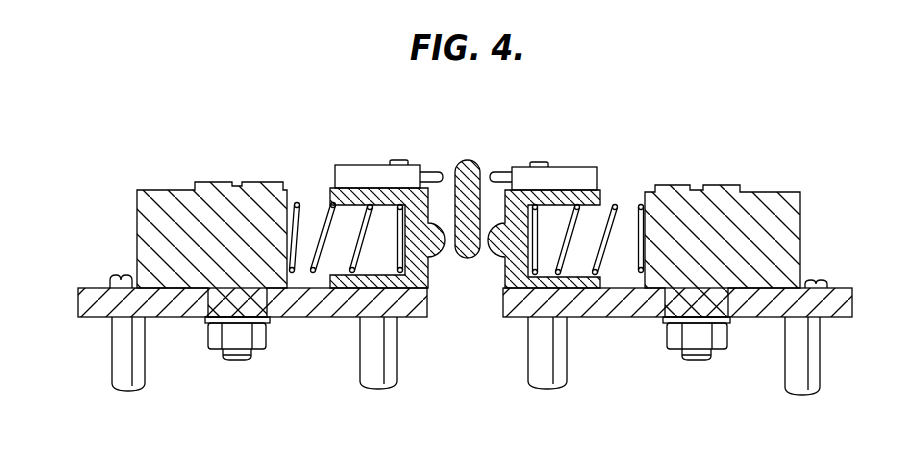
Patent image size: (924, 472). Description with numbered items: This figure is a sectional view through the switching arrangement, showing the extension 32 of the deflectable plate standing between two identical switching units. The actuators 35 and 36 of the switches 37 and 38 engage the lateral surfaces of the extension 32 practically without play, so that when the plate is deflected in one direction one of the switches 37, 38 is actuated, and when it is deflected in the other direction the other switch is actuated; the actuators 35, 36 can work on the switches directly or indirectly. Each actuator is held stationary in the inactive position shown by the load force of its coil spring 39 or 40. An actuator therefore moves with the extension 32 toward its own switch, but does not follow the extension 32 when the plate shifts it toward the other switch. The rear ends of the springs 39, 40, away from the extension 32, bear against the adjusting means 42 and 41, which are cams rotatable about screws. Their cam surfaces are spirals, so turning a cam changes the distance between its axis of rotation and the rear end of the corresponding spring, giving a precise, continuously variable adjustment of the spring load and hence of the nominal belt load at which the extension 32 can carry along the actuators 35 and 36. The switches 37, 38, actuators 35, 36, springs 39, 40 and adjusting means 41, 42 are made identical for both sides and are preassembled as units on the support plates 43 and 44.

The extension 32 is at (473, 161).
The actuator 35 is at (440, 248).
The actuator 36 is at (493, 249).
The switch 37 is at (572, 180).
The switch 38 is at (351, 176).
The coil spring 39 is at (322, 215).
The coil spring 40 is at (621, 216).
The adjusting means 41 is at (190, 192).
The adjusting means 42 is at (762, 198).
The support plate 43 is at (850, 298).
The support plate 44 is at (87, 310).